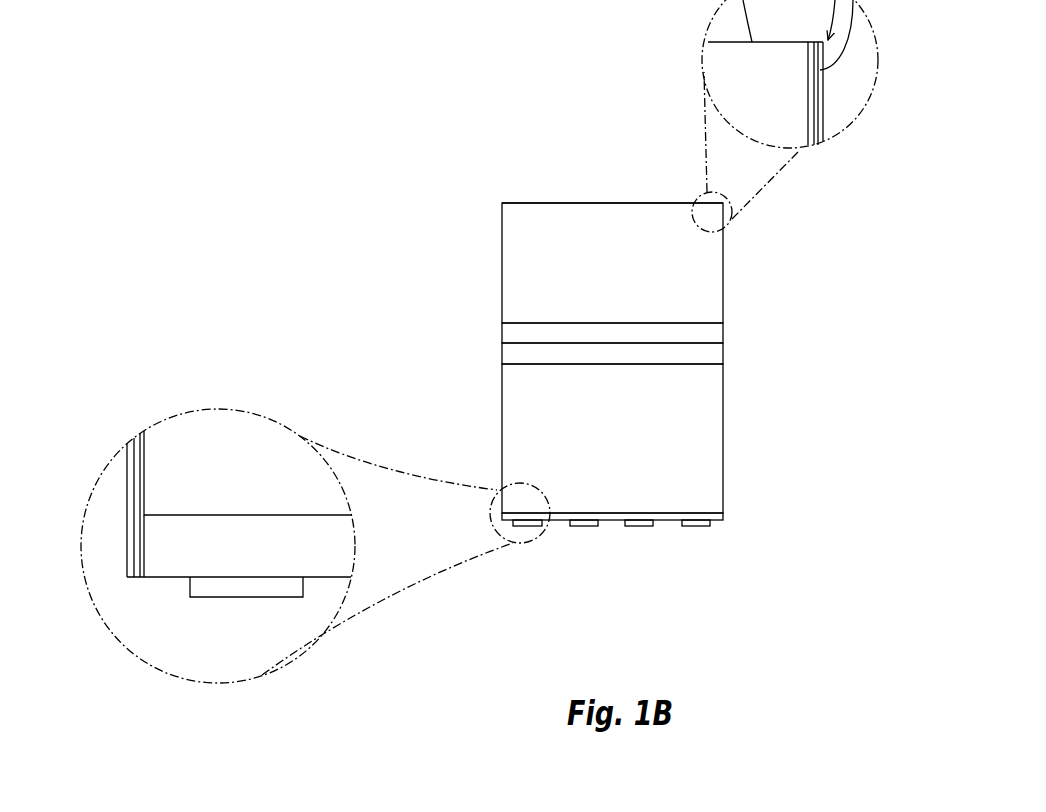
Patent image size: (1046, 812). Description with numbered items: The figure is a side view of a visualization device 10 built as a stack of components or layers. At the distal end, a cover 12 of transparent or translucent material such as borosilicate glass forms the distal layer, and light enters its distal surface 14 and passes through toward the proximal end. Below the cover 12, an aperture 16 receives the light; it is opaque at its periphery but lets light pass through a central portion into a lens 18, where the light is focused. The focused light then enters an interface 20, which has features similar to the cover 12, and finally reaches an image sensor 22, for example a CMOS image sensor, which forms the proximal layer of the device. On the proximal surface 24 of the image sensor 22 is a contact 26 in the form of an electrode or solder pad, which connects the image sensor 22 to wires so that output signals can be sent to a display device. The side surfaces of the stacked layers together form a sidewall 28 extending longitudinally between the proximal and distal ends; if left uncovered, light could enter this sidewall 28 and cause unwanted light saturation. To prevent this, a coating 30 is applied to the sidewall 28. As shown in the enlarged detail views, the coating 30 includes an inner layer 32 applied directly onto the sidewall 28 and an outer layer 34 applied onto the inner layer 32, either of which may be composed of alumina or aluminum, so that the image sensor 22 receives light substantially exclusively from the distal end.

The visualization device 10 is at (440, 182).
The cover 12 is at (723, 277).
The distal surface 14 is at (562, 203).
The aperture 16 is at (723, 330).
The lens 18 is at (723, 355).
The interface 20 is at (723, 423).
The image sensor 22 is at (723, 520).
The proximal surface 24 is at (673, 527).
The contact 26 is at (530, 525).
The sidewall 28 is at (565, 265).
The coating 30 is at (125, 483).
The inner layer 32 is at (140, 512).
The outer layer 34 is at (132, 562).